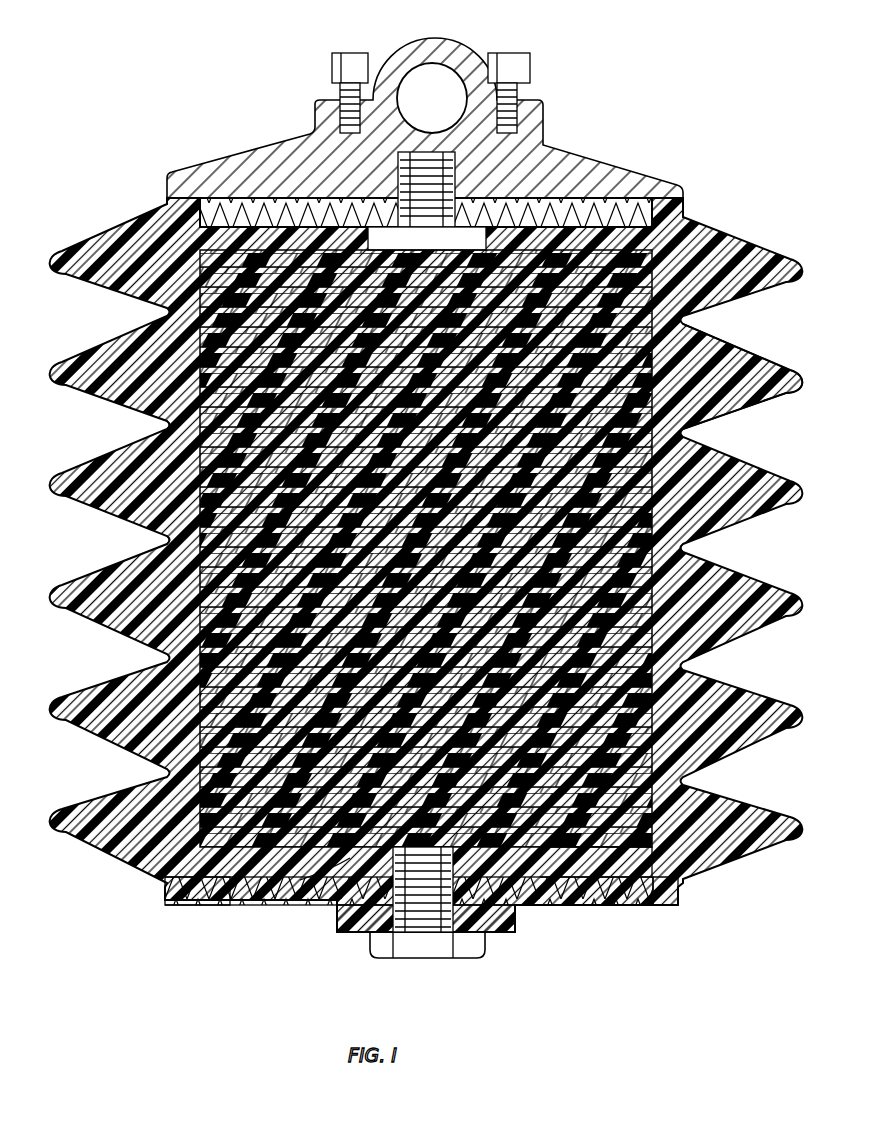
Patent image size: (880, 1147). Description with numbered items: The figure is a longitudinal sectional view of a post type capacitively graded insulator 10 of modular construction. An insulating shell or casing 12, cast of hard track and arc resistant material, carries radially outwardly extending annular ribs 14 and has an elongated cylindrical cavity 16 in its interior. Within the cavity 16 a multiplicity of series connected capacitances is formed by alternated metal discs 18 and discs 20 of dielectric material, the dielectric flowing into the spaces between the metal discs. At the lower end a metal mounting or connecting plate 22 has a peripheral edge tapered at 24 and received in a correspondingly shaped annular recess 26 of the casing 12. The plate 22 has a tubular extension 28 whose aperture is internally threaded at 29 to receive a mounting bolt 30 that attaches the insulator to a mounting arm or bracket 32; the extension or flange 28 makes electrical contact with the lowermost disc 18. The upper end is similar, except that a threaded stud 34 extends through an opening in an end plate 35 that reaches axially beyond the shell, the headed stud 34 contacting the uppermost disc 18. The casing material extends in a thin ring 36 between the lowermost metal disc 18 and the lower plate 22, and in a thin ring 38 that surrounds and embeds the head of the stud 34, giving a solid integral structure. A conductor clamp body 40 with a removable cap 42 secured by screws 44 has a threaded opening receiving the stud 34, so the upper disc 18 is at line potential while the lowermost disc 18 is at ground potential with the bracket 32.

The insulator 10 is at (692, 175).
The insulating shell or casing 12 is at (730, 227).
The annular ribs 14 is at (770, 380).
The elongated cylindrical cavity 16 is at (660, 549).
The metal discs 18 is at (200, 424).
The dielectric discs 20 is at (200, 541).
The mounting or connecting plate 22 is at (568, 896).
The tapered peripheral edge 24 is at (645, 880).
The annular recess 26 is at (226, 880).
The tubular extension 28 is at (303, 882).
The internal threads 29 is at (350, 933).
The mounting bolt 30 is at (435, 946).
The mounting arm or bracket 32 is at (506, 933).
The threaded stud 34 is at (444, 182).
The end plate 35 is at (604, 214).
The thin ring 36 is at (608, 862).
The thin ring 38 is at (290, 212).
The conductor clamp body 40 is at (294, 129).
The removable cap 42 is at (458, 56).
The screws 44 is at (530, 70).